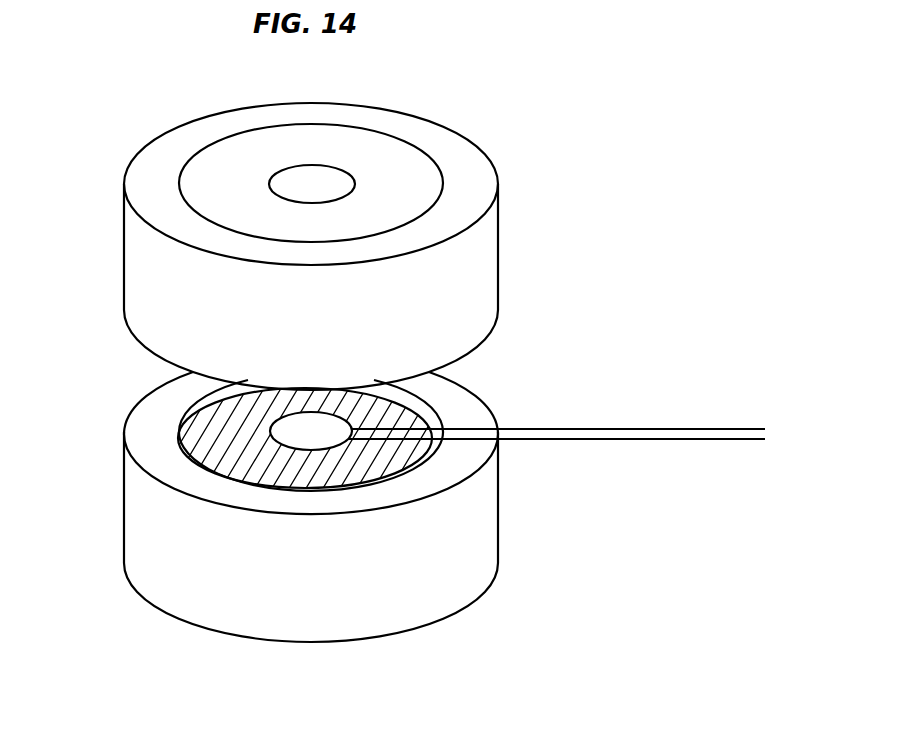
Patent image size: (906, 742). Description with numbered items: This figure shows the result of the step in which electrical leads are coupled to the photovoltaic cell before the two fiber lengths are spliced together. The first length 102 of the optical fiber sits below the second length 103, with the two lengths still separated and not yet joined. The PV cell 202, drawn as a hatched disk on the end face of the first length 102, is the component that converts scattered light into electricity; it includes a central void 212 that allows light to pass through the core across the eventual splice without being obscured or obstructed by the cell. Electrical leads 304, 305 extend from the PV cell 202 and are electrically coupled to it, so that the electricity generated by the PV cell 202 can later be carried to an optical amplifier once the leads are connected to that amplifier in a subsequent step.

The second length 103 is at (468, 287).
The first length 102 is at (477, 520).
The PV cell 202 is at (438, 394).
The void 212 is at (300, 434).
The electrical lead 304 is at (698, 428).
The electrical lead 305 is at (688, 441).